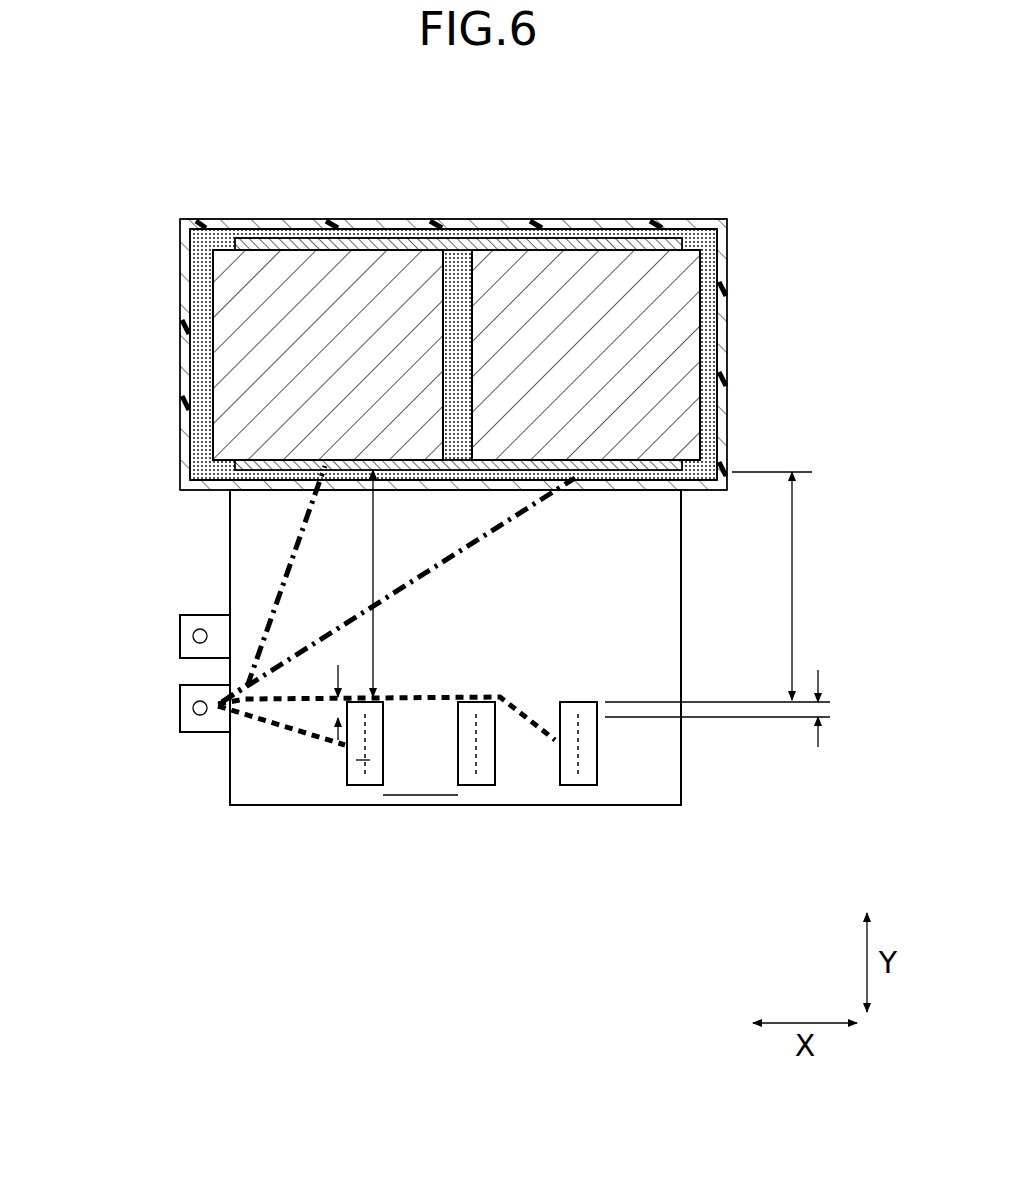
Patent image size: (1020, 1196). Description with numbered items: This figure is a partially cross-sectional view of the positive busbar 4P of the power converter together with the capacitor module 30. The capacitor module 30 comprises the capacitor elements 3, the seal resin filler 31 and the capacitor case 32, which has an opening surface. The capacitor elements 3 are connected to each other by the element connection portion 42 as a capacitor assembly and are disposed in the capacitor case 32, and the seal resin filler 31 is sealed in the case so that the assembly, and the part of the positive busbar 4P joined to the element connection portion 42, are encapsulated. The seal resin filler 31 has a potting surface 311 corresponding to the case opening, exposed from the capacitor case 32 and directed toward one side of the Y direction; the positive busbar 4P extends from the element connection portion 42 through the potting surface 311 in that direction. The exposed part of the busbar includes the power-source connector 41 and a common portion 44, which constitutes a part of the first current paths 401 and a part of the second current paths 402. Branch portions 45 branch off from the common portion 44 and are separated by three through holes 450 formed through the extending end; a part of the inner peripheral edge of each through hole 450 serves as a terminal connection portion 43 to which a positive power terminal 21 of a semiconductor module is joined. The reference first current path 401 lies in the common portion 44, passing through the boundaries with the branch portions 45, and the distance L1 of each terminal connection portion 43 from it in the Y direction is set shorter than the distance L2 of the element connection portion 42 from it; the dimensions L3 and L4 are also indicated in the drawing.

The capacitor module 30 is at (714, 192).
The capacitor case 32 is at (190, 236).
The seal resin filler 31 is at (196, 476).
The potting surface 311 is at (216, 492).
The element connection portion 42 is at (628, 467).
The capacitor element 3 is at (328, 272).
The positive busbar 4P is at (532, 661).
The common portion 44 is at (645, 568).
The power-source connector 41 is at (185, 630).
The terminal connection portion 43 is at (346, 748).
The through hole 450 is at (373, 780).
The branch portion 45 is at (420, 762).
The power terminal 21 is at (362, 776).
The first current path 401 is at (280, 726).
The second current path 402 is at (325, 610).
The distance L1 is at (337, 716).
The distance L2 is at (398, 583).
The distance L3 is at (737, 716).
The distance L4 is at (782, 586).